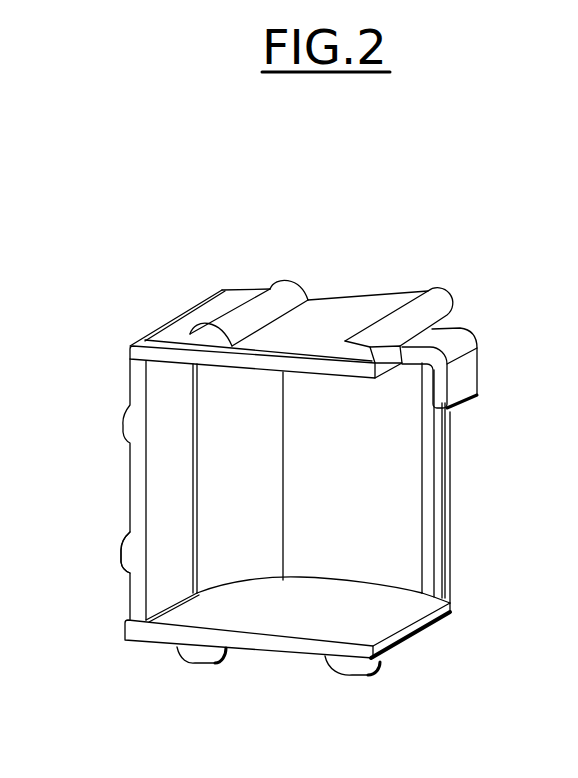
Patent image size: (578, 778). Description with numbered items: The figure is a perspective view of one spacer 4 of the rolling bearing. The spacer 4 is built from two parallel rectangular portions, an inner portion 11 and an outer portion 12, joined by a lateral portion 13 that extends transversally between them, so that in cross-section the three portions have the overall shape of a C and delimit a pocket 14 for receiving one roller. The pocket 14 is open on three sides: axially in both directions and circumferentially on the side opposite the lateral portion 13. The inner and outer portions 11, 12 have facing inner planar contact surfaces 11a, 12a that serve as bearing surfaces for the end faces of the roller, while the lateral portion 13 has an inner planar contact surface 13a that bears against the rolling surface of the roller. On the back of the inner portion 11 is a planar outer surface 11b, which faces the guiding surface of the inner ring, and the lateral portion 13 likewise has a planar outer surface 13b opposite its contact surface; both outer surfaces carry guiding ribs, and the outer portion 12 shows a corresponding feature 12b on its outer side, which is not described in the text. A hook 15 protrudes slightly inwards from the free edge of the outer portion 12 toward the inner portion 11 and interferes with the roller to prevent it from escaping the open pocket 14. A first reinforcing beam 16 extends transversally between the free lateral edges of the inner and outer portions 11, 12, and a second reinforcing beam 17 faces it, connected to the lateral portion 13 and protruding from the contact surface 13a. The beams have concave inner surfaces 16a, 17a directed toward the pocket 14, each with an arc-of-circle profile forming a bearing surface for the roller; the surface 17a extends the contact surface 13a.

The spacer 4 is at (206, 262).
The inner portion 11 is at (297, 661).
The inner planar contact surface 11a is at (324, 622).
The planar outer surface 11b is at (235, 650).
The outer portion 12 is at (330, 308).
The inner planar contact surface 12a is at (349, 400).
The rib 12b is at (291, 300).
The lateral portion 13 is at (124, 492).
The inner planar contact surface 13a is at (194, 491).
The planar outer surface 13b is at (128, 531).
The pocket 14 is at (383, 430).
The hook 15 is at (462, 377).
The first reinforcing beam 16 is at (458, 503).
The concave inner surface 16a is at (432, 534).
The second reinforcing beam 17 is at (230, 419).
The concave inner surface 17a is at (262, 472).